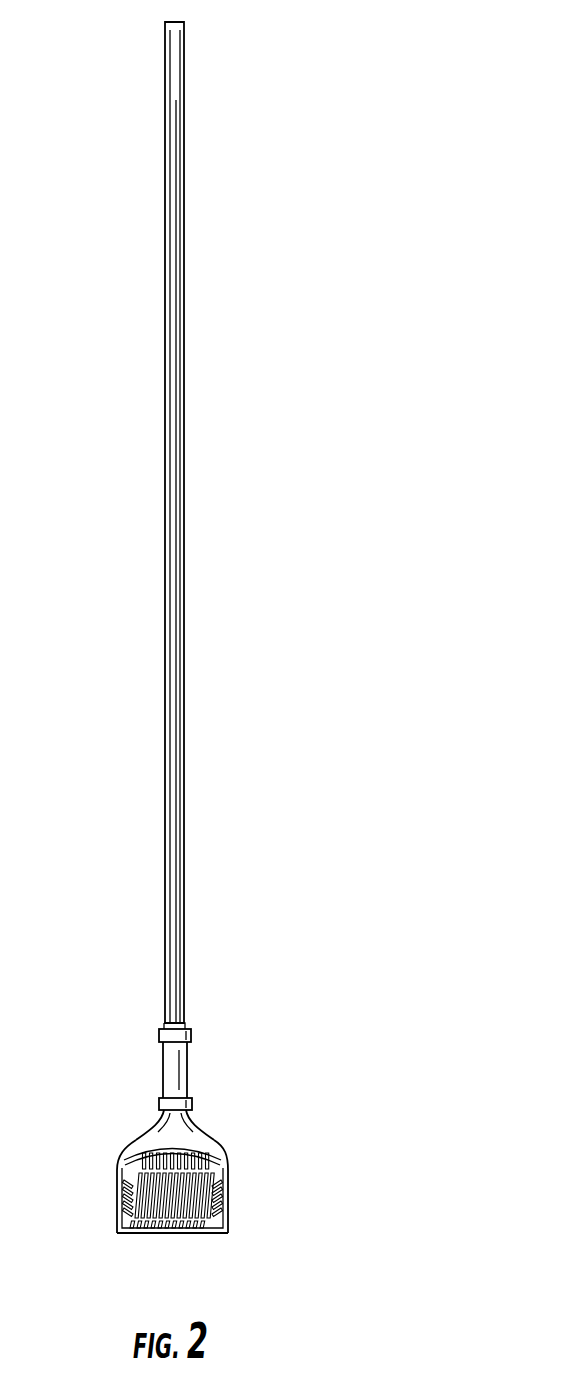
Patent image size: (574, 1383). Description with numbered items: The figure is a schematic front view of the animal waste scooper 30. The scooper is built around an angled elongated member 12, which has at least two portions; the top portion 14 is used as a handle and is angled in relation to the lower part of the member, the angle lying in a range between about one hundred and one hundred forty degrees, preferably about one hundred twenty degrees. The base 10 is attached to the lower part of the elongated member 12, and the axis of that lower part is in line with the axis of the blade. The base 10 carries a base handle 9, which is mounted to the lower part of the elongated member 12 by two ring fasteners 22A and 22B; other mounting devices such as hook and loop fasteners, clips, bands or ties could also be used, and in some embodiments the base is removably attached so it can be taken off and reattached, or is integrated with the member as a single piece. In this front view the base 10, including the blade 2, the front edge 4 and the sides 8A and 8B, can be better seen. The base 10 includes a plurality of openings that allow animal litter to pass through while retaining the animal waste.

The scooper 30 is at (455, 1276).
The angled elongated member 12 is at (233, 12).
The top portion 14 is at (172, 160).
The base handle 9 is at (172, 1067).
The ring fastener 22A is at (180, 1033).
The ring fastener 22B is at (160, 1103).
The base 10 is at (260, 1130).
The blade 2 is at (167, 1183).
The side 8A is at (218, 1198).
The side 8B is at (117, 1173).
The front edge 4 is at (190, 1227).